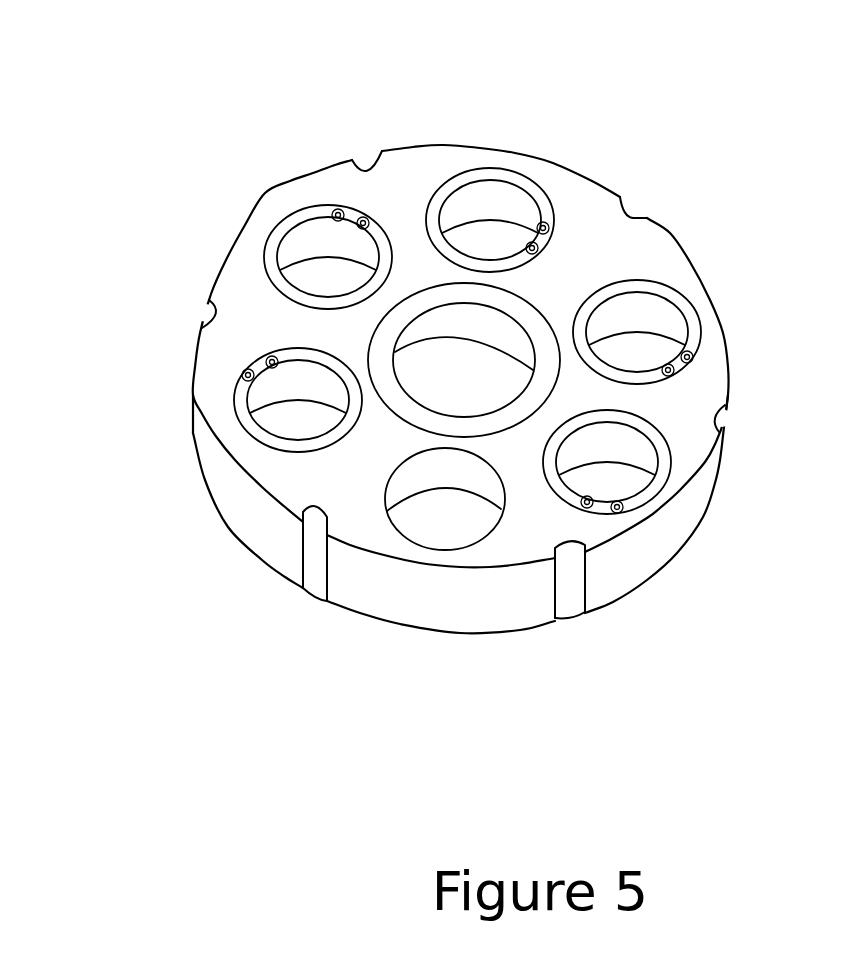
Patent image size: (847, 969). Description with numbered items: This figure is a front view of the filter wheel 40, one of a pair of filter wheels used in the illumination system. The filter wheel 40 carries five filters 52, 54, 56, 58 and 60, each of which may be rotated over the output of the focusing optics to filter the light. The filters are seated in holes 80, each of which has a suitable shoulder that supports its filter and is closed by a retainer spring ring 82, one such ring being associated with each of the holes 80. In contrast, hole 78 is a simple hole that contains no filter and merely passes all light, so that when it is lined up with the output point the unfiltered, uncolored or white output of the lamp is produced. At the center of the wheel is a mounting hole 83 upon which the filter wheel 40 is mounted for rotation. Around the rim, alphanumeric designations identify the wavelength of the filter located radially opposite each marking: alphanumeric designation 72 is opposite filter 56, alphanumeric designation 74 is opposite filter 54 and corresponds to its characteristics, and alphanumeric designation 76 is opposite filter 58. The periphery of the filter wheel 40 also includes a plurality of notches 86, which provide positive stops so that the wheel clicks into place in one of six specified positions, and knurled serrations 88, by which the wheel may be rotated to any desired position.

The filter wheel 40 is at (718, 362).
The filter 52 is at (298, 400).
The filter 54 is at (328, 257).
The filter 56 is at (490, 220).
The filter 58 is at (637, 332).
The filter 60 is at (607, 462).
The alphanumeric designation 72 is at (437, 606).
The alphanumeric designation 74 is at (628, 567).
The alphanumeric designation 76 is at (195, 418).
The hole 78 is at (403, 532).
The holes 80 is at (520, 172).
The retainer spring ring 82 is at (306, 232).
The mounting hole 83 is at (418, 397).
The notches 86 is at (398, 208).
The knurled serrations 88 is at (703, 515).